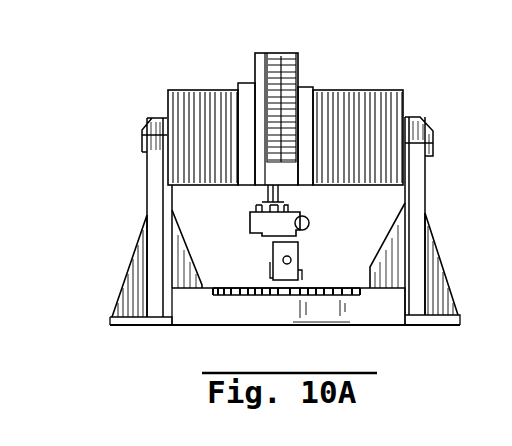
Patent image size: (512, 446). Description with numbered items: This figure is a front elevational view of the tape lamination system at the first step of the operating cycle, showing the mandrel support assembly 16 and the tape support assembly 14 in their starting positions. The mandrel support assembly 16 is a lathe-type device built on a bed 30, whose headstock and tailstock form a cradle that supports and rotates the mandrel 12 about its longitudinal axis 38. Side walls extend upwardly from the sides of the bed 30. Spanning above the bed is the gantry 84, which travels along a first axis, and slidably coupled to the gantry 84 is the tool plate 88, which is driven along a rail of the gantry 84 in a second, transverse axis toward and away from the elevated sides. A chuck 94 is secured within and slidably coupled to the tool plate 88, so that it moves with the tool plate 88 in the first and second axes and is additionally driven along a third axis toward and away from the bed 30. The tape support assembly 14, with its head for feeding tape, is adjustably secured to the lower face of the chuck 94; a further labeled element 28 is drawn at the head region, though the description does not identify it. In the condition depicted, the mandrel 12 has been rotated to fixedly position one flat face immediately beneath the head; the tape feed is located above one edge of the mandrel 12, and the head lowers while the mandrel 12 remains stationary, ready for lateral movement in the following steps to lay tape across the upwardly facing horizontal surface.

The mandrel 12 is at (270, 266).
The tape support assembly 14 is at (317, 208).
The mandrel support assembly 16 is at (116, 250).
The roller 28 is at (306, 229).
The bed 30 is at (350, 292).
The longitudinal axis 38 is at (288, 265).
The gantry 84 is at (365, 90).
The tool plate 88 is at (255, 71).
The chuck 94 is at (262, 204).